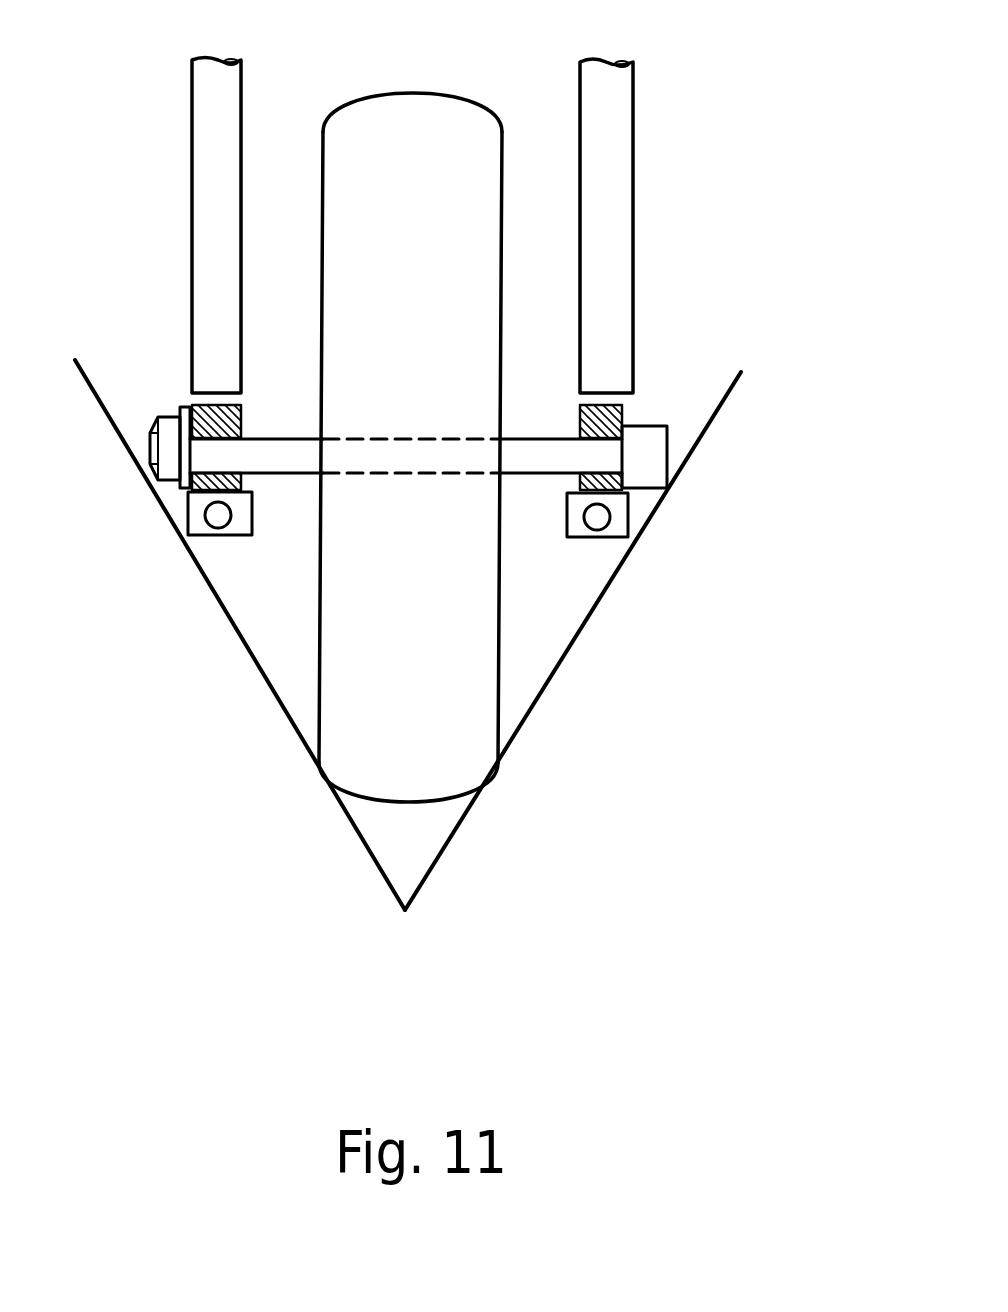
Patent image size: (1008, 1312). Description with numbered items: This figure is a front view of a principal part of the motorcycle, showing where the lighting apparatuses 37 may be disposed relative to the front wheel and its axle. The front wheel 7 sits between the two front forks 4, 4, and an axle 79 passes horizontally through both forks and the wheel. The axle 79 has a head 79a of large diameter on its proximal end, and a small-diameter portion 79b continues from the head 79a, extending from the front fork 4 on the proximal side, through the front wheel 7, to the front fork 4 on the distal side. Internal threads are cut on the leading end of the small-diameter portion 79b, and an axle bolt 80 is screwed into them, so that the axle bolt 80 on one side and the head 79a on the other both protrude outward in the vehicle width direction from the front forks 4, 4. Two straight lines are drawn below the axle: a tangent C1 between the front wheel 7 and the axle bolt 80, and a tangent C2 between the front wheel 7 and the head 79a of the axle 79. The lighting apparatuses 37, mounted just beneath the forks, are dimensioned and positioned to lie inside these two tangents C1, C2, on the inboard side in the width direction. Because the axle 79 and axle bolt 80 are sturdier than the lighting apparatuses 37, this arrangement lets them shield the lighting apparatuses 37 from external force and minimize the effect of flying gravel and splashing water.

The front wheel 7 is at (450, 113).
The front fork 4 is at (212, 215).
The axle 79 is at (522, 474).
The head 79a is at (643, 443).
The small-diameter portion 79b is at (292, 463).
The axle bolt 80 is at (163, 450).
The lighting apparatus 37 is at (185, 533).
The tangent C1 is at (247, 648).
The tangent C2 is at (567, 655).